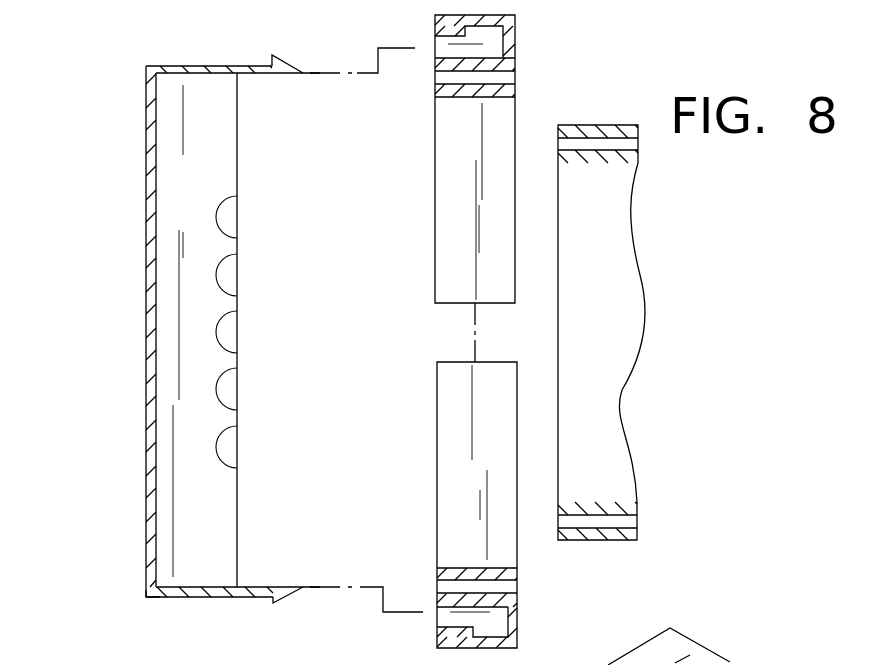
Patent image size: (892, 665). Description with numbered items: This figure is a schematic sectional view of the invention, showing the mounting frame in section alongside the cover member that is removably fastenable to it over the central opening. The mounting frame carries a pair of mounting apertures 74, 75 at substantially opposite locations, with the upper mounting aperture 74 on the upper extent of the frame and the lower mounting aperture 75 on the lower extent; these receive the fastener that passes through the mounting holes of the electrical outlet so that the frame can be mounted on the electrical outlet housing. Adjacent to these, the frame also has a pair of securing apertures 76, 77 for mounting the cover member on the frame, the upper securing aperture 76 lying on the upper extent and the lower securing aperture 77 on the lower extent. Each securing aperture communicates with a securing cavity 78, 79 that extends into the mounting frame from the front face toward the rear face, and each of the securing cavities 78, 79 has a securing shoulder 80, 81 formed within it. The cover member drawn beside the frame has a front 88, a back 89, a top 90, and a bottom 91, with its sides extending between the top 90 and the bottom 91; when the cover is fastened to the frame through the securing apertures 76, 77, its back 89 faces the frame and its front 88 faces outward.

The upper mounting aperture 74 is at (434, 80).
The lower mounting aperture 75 is at (436, 585).
The upper securing aperture 76 is at (434, 37).
The lower securing aperture 77 is at (437, 612).
The securing cavity 78 is at (493, 44).
The securing cavity 79 is at (500, 620).
The securing shoulder 80 is at (503, 31).
The securing shoulder 81 is at (493, 630).
The front 88 is at (150, 362).
The back 89 is at (158, 506).
The top 90 is at (172, 67).
The bottom 91 is at (160, 598).